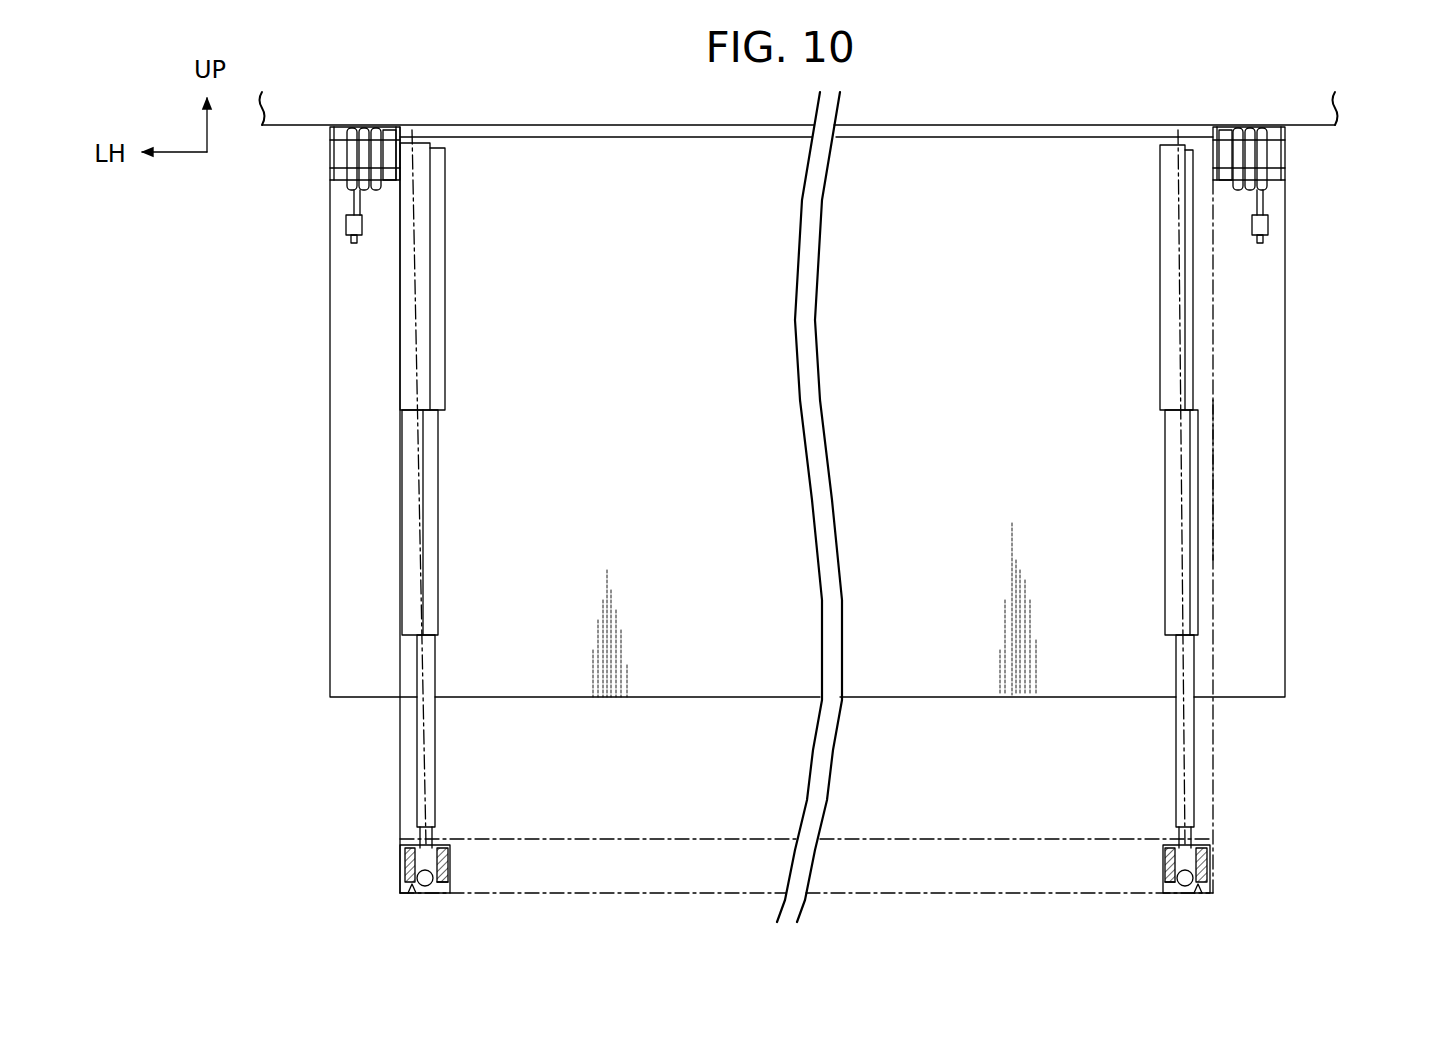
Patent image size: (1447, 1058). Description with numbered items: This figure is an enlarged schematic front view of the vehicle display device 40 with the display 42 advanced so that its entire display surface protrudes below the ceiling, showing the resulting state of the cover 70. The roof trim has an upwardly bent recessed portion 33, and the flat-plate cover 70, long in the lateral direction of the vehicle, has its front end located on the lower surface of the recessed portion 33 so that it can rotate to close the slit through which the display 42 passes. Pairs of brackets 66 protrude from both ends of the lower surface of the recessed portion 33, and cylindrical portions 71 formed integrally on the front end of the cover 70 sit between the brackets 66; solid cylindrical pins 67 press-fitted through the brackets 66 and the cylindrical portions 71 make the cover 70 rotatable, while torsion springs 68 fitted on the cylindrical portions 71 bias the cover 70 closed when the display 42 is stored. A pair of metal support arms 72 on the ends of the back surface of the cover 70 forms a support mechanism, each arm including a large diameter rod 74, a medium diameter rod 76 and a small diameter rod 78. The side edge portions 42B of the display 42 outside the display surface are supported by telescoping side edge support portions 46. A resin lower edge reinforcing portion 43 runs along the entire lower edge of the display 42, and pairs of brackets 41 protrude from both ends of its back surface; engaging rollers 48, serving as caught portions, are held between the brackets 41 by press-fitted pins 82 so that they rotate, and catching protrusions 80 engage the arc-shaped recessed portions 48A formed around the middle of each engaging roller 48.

The recessed portion 33 is at (957, 138).
The partition panel device 40 is at (1318, 621).
The brackets 41 is at (402, 886).
The display 42 is at (395, 772).
The side edge portions 42B is at (1213, 742).
The lower edge reinforcing portion 43 is at (930, 838).
The side edge support portions 46 is at (1213, 487).
The engaging rollers 48 is at (412, 893).
The arc-shaped recessed portions 48A is at (445, 878).
The brackets 66 is at (388, 128).
The pins 67 is at (330, 158).
The torsion springs 68 is at (358, 195).
The cover 70 is at (1288, 360).
The cylindrical portions 71 is at (352, 127).
The support arms 72 is at (799, 489).
The large diameter rod 74 is at (445, 238).
The medium diameter rod 76 is at (445, 465).
The small diameter rod 78 is at (435, 772).
The catching protrusions 80 is at (425, 887).
The pins 82 is at (813, 875).